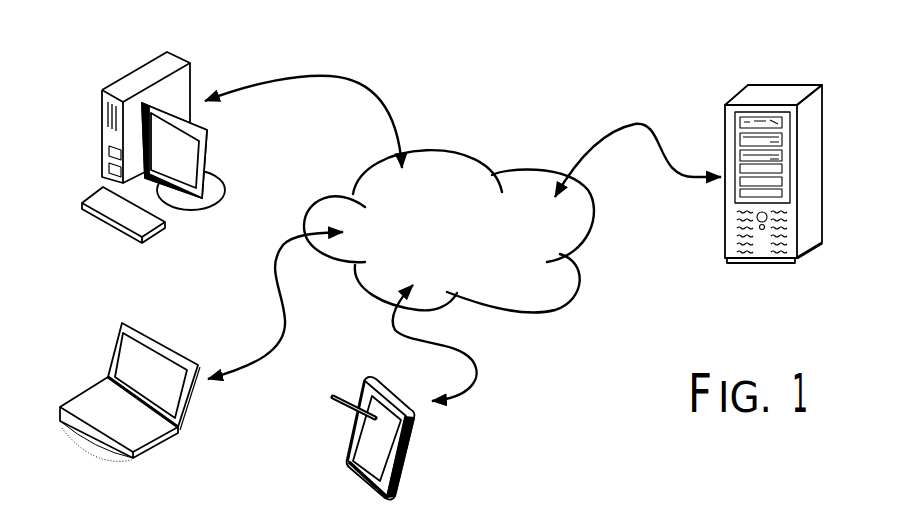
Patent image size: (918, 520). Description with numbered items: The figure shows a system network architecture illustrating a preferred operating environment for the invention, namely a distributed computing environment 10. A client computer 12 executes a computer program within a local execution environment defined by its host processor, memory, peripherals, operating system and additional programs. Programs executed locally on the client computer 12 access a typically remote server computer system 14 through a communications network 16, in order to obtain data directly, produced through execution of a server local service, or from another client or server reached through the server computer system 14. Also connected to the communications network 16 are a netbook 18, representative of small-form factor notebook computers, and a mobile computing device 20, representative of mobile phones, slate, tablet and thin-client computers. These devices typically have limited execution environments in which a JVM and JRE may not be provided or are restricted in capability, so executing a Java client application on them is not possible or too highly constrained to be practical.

The distributed computing environment 10 is at (600, 378).
The client computer 12 is at (177, 54).
The server computer system 14 is at (822, 173).
The communications network 16 is at (518, 293).
The netbook 18 is at (147, 448).
The mobile computing device 20 is at (417, 427).